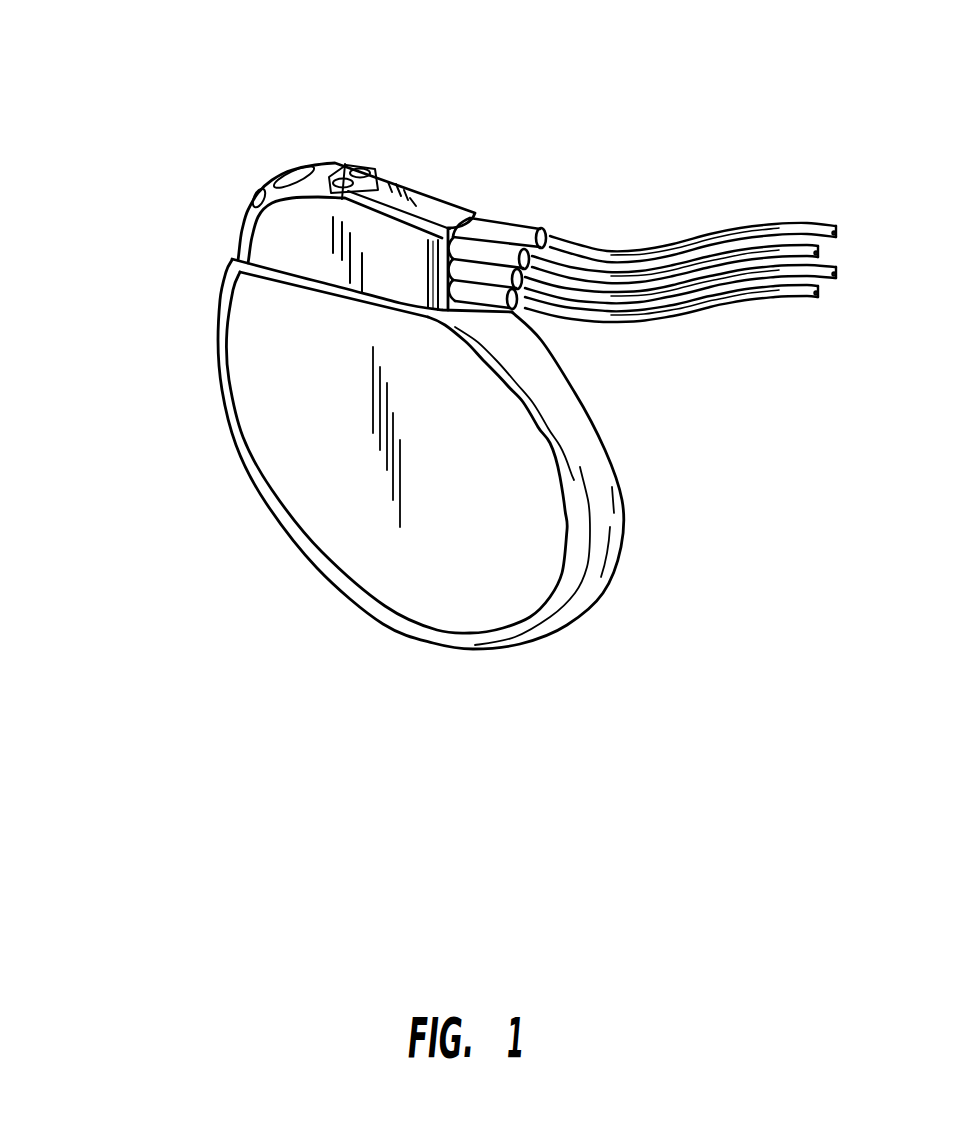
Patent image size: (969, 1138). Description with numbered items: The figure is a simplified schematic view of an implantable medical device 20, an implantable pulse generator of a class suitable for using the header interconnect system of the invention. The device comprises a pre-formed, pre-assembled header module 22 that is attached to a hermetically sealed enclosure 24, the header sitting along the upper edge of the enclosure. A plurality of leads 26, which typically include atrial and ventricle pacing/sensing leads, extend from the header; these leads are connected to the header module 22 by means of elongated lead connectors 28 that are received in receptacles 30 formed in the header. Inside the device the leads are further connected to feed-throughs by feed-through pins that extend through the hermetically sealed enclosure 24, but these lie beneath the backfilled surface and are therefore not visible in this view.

The implantable medical device 20 is at (188, 128).
The header module 22 is at (378, 154).
The hermetically sealed enclosure 24 is at (413, 595).
The leads 26 is at (720, 188).
The elongated lead connectors 28 is at (553, 310).
The receptacles 30 is at (487, 208).